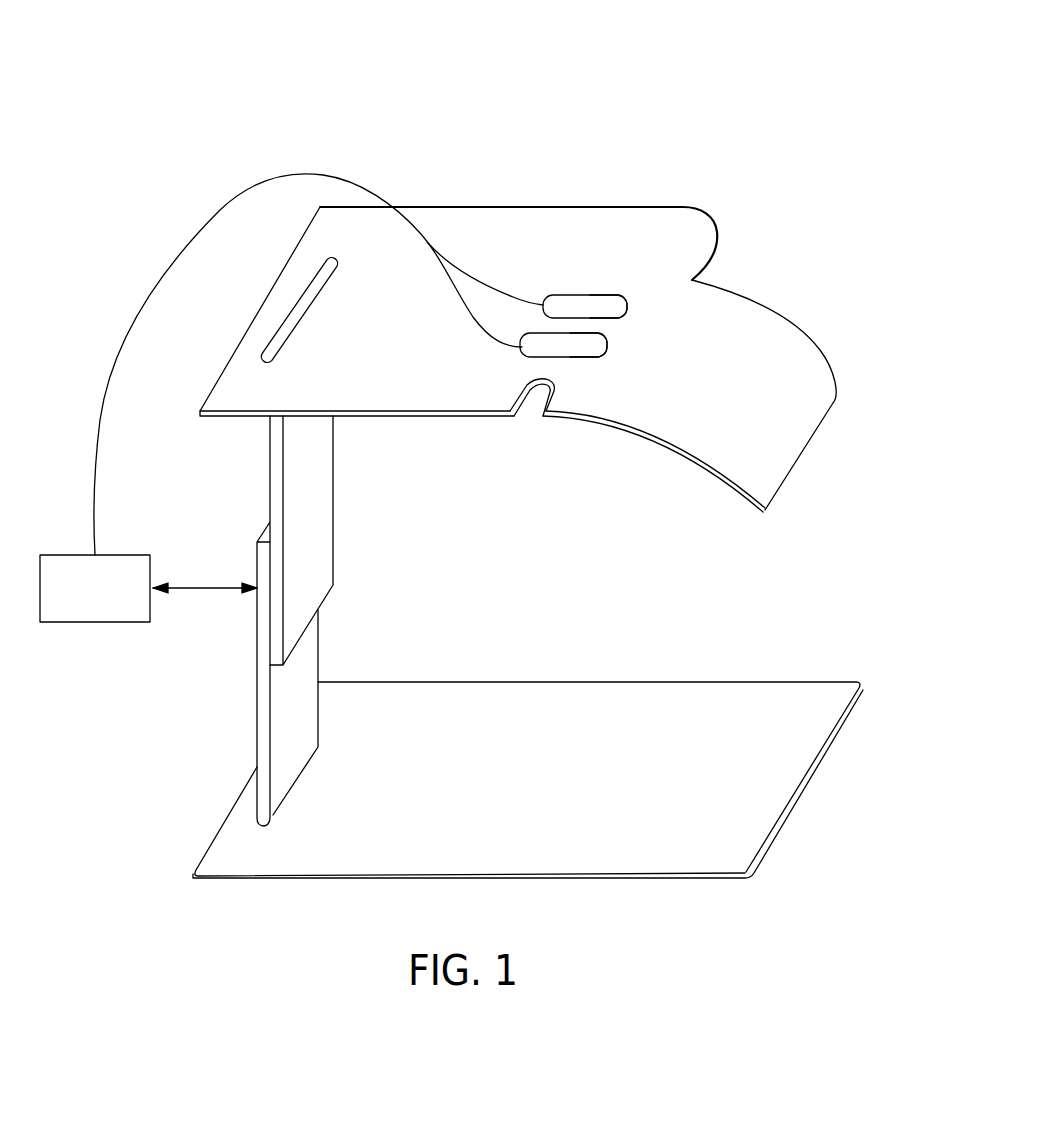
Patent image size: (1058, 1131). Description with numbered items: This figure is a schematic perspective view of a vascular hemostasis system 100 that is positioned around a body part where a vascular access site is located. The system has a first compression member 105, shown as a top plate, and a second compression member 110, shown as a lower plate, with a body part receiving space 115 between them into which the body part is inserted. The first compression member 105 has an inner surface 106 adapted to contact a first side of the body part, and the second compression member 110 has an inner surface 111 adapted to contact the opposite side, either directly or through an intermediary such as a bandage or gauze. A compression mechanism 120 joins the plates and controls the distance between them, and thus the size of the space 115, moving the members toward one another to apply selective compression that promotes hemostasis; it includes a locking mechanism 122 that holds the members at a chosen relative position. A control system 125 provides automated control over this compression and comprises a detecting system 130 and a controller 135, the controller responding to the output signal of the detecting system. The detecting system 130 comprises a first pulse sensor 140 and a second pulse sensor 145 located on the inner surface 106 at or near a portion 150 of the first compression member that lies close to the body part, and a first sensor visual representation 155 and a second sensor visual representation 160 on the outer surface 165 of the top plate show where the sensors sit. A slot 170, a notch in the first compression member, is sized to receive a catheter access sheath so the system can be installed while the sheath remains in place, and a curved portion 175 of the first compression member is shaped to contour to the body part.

The vascular hemostasis system 100 is at (717, 92).
The first compression member 105 is at (500, 218).
The inner surface 106 is at (474, 422).
The second compression member 110 is at (735, 857).
The inner surface 111 is at (573, 700).
The body part receiving space 115 is at (792, 561).
The compression mechanism 120 is at (367, 528).
The locking mechanism 122 is at (226, 532).
The control system 125 is at (137, 273).
The detecting system 130 is at (624, 244).
The controller 135 is at (95, 625).
The first pulse sensor 140 is at (577, 298).
The second pulse sensor 145 is at (522, 349).
The portion 150 is at (563, 424).
The first sensor visual representation 155 is at (628, 308).
The second sensor visual representation 160 is at (607, 345).
The outer surface 165 is at (550, 214).
The slot 170 is at (530, 422).
The curved portion 175 is at (810, 308).